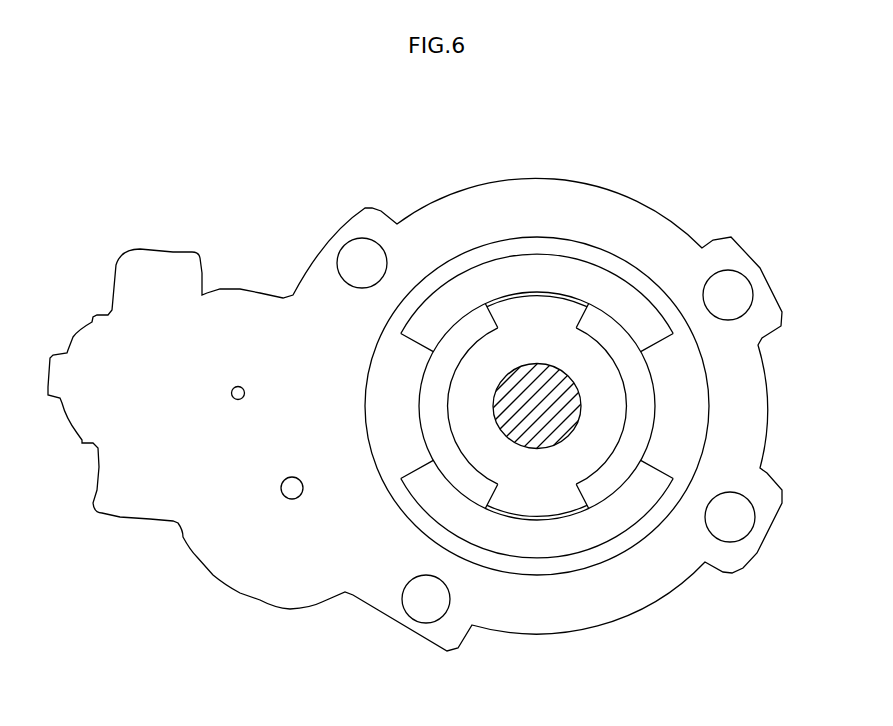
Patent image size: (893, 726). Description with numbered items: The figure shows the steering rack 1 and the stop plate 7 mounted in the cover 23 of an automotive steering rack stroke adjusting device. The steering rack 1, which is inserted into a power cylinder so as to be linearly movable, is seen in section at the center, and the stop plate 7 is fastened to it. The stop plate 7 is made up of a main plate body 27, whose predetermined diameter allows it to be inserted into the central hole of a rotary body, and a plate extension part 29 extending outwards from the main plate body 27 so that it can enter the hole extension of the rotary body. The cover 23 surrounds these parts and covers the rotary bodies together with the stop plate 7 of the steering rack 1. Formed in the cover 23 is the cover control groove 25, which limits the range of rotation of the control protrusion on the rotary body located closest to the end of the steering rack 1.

The steering rack 1 is at (540, 408).
The stop plate 7 is at (537, 313).
The cover 23 is at (623, 207).
The cover control groove 25 is at (627, 295).
The main plate body 27 is at (472, 362).
The plate extension part 29 is at (528, 308).